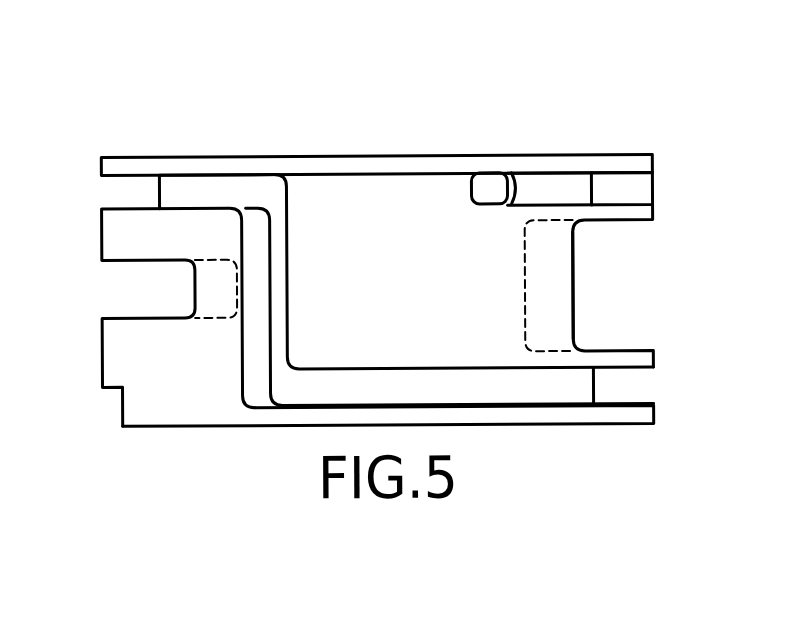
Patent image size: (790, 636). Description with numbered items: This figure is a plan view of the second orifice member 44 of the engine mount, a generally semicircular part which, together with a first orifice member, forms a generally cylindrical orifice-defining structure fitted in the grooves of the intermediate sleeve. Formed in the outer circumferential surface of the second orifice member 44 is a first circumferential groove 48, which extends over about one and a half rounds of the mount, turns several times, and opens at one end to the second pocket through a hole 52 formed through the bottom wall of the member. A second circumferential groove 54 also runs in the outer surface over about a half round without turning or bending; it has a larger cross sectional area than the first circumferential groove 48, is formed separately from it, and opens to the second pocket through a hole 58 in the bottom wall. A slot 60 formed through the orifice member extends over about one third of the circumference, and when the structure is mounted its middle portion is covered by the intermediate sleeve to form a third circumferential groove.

The second orifice member 44 is at (473, 91).
The first circumferential groove 48 is at (522, 405).
The hole 52 is at (476, 190).
The second circumferential groove 54 is at (628, 351).
The hole 58 is at (576, 260).
The slot 60 is at (137, 261).